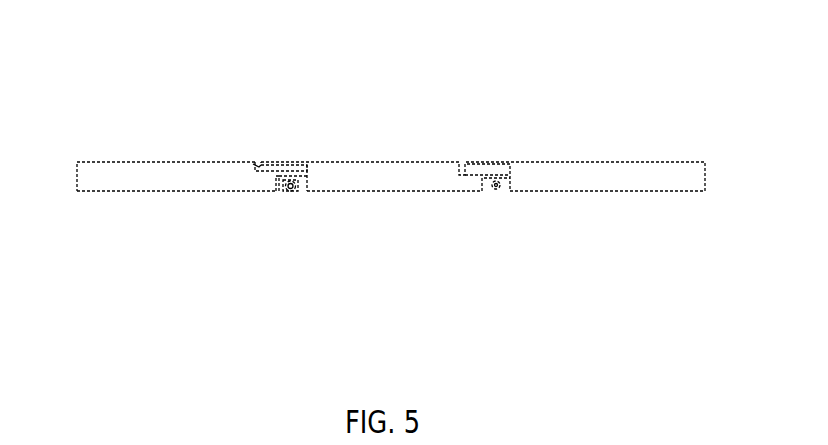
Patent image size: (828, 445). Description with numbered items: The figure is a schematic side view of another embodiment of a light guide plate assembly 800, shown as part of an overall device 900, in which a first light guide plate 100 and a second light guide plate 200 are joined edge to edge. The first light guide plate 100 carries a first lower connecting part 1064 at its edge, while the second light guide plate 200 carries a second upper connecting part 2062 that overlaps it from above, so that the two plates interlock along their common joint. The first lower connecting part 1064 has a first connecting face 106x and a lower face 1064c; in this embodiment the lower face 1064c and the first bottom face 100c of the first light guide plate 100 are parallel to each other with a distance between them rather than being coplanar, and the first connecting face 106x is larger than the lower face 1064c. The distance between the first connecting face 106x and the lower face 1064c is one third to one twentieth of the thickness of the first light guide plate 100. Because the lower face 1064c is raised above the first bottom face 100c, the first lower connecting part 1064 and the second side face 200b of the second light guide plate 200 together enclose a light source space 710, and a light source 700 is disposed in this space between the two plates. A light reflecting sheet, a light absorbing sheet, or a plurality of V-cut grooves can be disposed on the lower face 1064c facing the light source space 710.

The electronic device 900 is at (123, 44).
The light guide plate assembly 800 is at (317, 90).
The first light guide plate 100 is at (144, 180).
The first bottom face 100c is at (121, 192).
The second light guide plate 200 is at (362, 165).
The second side face 200b is at (313, 182).
The first lower connecting part 1064 is at (305, 178).
The lower face of the first lower connecting part 1064c is at (275, 178).
The second upper connecting part 2062 is at (255, 167).
The first connecting face 106x is at (274, 176).
The light source 700 is at (286, 181).
The light source space 710 is at (303, 181).